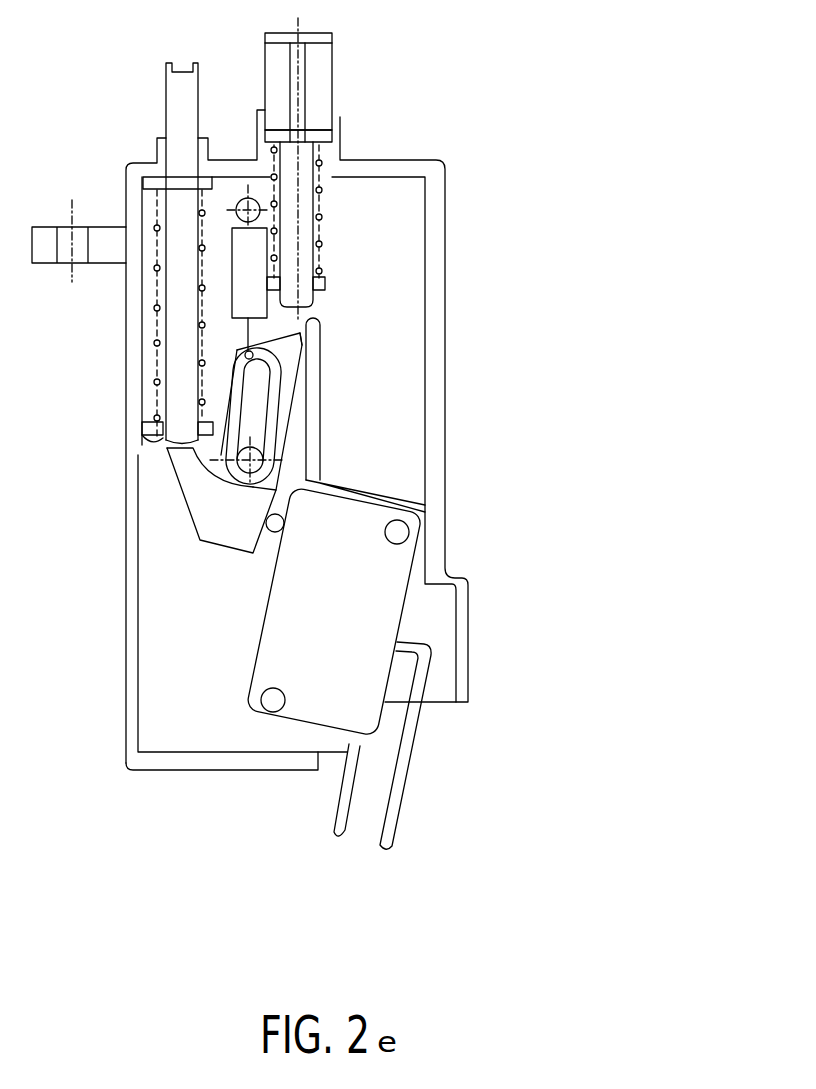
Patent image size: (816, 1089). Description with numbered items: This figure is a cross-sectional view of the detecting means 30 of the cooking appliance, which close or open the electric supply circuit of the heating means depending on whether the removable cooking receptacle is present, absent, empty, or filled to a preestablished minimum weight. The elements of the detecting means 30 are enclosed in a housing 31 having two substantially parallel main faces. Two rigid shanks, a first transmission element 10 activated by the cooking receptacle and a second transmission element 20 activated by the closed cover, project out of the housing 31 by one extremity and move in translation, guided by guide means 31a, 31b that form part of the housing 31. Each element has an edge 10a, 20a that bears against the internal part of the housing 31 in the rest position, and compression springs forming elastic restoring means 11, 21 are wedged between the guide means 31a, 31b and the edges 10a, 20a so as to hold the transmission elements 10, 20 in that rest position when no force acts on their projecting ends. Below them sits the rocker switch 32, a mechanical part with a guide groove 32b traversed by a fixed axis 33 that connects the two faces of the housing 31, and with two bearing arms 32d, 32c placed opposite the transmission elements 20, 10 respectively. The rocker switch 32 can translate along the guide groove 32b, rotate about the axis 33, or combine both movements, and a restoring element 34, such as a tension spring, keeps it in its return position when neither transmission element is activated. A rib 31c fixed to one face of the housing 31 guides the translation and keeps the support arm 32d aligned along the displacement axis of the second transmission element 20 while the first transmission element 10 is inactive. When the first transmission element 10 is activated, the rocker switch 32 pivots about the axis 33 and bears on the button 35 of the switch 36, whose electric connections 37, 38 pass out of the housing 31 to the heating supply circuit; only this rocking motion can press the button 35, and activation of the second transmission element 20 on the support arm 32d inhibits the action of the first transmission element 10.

The transmission element 10 is at (178, 93).
The edge 10a is at (153, 183).
The elastic restoring means 11 is at (153, 342).
The second transmission element 20 is at (322, 70).
The edge 20a is at (317, 137).
The elastic restoring means 21 is at (320, 225).
The detecting means 30 is at (284, 462).
The housing 31 is at (460, 622).
The guide means 31a is at (140, 445).
The guide means 31b is at (325, 286).
The rib 31c is at (315, 440).
The rocker switch 32 is at (285, 456).
The guide groove 32b is at (267, 410).
The bearing arm 32c is at (177, 477).
The bearing arm 32d is at (316, 348).
The axis 33 is at (237, 480).
The restoring element 34 is at (247, 259).
The button 35 is at (267, 560).
The switch 36 is at (375, 570).
The electric connection 37 is at (343, 823).
The electric connection 38 is at (400, 795).